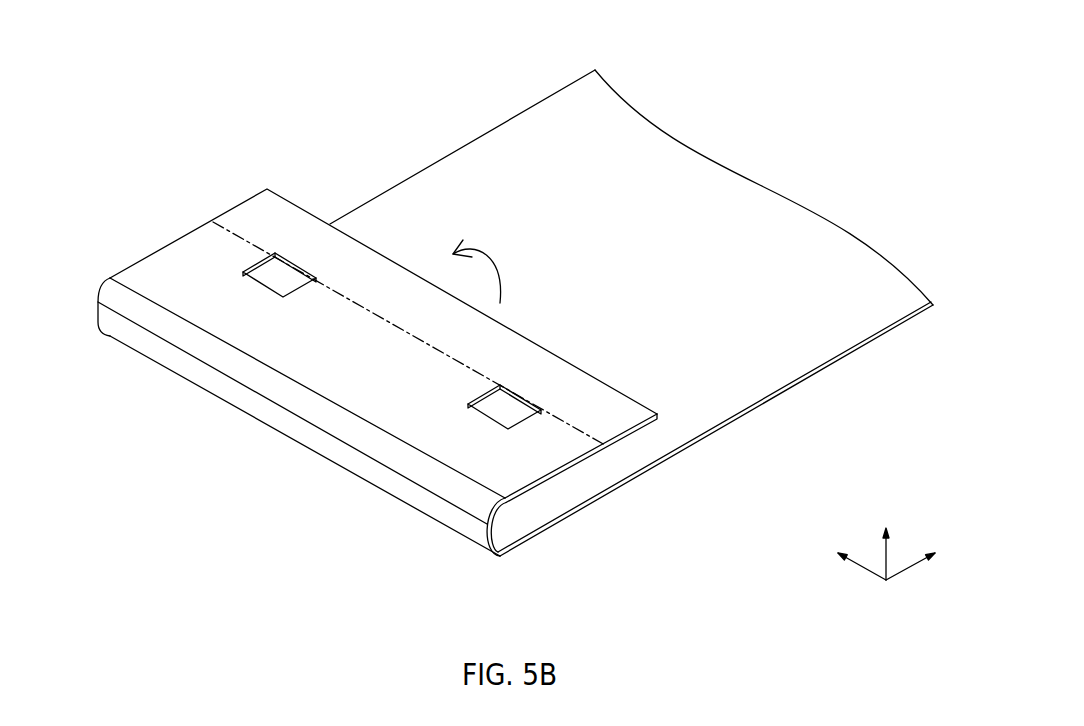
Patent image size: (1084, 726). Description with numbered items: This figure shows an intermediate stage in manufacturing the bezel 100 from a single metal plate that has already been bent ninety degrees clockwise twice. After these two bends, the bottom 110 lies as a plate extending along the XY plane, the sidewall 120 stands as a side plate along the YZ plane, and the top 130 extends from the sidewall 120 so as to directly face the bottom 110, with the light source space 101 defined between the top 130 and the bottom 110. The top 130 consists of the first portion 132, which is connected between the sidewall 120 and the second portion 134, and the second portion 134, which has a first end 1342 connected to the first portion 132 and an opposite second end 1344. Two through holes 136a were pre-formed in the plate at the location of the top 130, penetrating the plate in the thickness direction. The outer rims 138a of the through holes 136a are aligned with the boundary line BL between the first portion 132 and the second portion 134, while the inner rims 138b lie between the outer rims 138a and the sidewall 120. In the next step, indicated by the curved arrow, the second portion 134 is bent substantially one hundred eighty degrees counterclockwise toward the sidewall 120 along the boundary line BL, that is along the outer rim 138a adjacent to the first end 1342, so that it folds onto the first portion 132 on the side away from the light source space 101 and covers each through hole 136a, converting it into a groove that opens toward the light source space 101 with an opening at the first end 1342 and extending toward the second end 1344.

The bezel 100 is at (129, 77).
The bottom 110 is at (858, 253).
The sidewall 120 is at (195, 365).
The top 130 is at (383, 383).
The first portion 132 is at (430, 358).
The second portion 134 is at (393, 288).
The first end 1342 is at (220, 218).
The second end 1344 is at (267, 188).
The through hole 136a is at (273, 275).
The outer rim 138a is at (292, 260).
The inner rim 138b is at (243, 272).
The light source space 101 is at (510, 530).
The boundary line BL is at (578, 423).